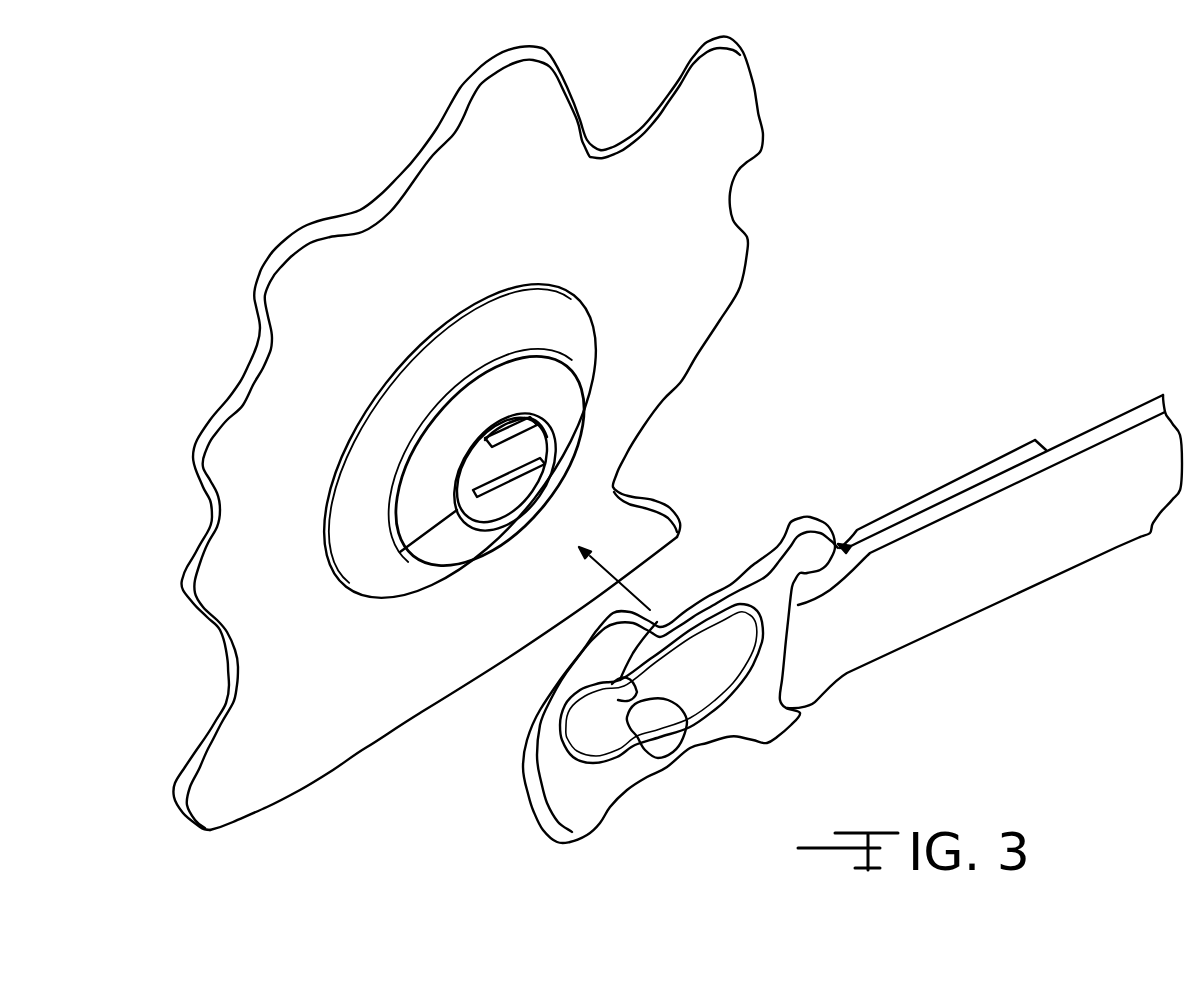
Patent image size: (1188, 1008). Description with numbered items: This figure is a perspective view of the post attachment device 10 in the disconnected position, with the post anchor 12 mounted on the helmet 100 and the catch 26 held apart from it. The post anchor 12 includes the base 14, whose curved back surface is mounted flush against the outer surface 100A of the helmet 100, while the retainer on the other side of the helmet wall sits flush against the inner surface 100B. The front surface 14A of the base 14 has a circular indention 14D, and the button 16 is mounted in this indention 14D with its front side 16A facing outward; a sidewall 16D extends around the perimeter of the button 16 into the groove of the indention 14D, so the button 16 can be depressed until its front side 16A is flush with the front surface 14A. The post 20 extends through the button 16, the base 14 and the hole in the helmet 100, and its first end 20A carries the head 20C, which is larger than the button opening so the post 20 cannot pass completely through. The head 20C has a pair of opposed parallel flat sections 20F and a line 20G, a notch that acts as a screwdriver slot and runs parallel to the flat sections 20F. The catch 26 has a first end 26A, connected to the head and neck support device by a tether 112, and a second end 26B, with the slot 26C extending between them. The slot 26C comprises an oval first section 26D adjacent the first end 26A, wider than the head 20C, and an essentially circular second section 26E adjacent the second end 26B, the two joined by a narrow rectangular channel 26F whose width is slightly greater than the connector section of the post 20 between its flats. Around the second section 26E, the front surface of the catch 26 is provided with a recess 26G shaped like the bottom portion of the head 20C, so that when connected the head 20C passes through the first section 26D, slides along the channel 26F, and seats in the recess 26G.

The post attachment device 10 is at (808, 376).
The post anchor 12 is at (331, 625).
The base 14 is at (469, 424).
The front surface 14A is at (480, 336).
The indention 14D is at (548, 345).
The button 16 is at (480, 456).
The front side 16A is at (453, 437).
The sidewall 16D is at (403, 487).
The post 20 is at (536, 461).
The first end 20A is at (545, 487).
The head 20C is at (497, 505).
The flat sections 20F is at (583, 396).
The line 20G is at (402, 546).
The catch 26 is at (647, 670).
The first end 26A is at (790, 722).
The second end 26B is at (583, 827).
The slot 26C is at (670, 714).
The first section 26D is at (722, 612).
The second section 26E is at (667, 603).
The channel 26F is at (660, 700).
The recess 26G is at (557, 773).
The helmet 100 is at (733, 123).
The outer surface 100A is at (690, 272).
The inner surface 100B is at (633, 124).
The tether 112 is at (1007, 557).